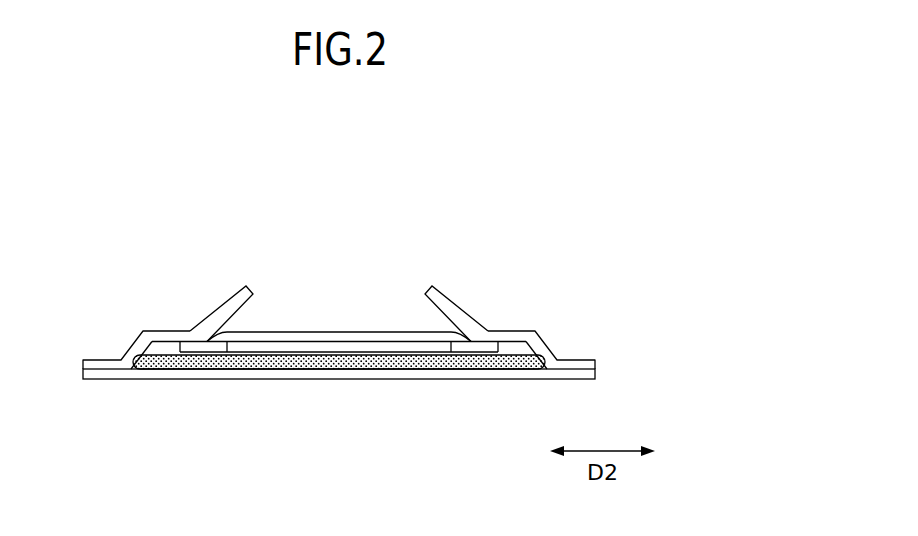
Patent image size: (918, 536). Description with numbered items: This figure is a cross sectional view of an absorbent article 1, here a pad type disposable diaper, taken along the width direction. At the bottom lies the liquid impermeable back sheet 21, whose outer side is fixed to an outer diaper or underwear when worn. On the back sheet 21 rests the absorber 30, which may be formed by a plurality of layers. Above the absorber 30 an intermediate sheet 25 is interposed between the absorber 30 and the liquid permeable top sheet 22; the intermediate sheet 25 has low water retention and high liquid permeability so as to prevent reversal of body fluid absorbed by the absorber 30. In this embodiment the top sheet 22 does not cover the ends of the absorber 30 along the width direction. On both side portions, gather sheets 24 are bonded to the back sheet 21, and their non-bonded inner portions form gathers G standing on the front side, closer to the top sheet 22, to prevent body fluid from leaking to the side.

The absorbent article 1 is at (485, 174).
The back sheet 21 is at (445, 376).
The top sheet 22 is at (277, 333).
The gather sheet 24 is at (100, 358).
The intermediate sheet 25 is at (330, 347).
The absorber 30 is at (380, 366).
The gather G is at (241, 290).